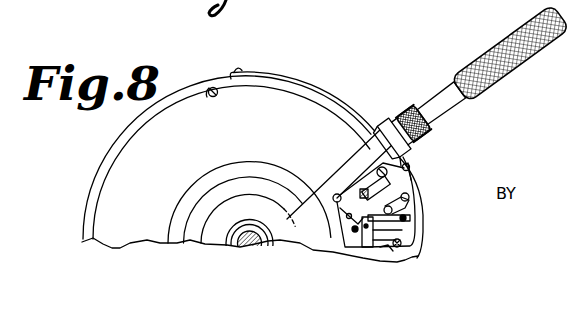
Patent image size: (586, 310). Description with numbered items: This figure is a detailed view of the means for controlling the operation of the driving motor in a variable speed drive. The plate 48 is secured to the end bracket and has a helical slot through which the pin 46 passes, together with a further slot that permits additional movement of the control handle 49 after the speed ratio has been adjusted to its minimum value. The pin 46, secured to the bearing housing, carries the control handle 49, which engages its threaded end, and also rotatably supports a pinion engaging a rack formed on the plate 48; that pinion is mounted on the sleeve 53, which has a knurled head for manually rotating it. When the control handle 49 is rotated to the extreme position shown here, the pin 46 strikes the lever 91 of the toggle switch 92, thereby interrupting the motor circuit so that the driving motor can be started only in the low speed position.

The pin 46 is at (352, 167).
The plate 48 is at (289, 77).
The control handle 49 is at (521, 66).
The sleeve 53 is at (423, 137).
The lever 91 is at (336, 194).
The toggle switch 92 is at (376, 204).